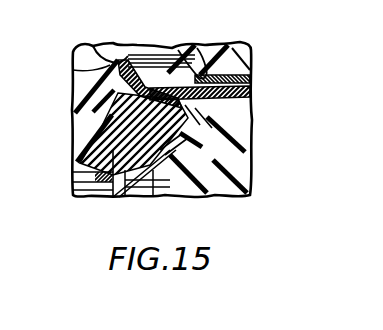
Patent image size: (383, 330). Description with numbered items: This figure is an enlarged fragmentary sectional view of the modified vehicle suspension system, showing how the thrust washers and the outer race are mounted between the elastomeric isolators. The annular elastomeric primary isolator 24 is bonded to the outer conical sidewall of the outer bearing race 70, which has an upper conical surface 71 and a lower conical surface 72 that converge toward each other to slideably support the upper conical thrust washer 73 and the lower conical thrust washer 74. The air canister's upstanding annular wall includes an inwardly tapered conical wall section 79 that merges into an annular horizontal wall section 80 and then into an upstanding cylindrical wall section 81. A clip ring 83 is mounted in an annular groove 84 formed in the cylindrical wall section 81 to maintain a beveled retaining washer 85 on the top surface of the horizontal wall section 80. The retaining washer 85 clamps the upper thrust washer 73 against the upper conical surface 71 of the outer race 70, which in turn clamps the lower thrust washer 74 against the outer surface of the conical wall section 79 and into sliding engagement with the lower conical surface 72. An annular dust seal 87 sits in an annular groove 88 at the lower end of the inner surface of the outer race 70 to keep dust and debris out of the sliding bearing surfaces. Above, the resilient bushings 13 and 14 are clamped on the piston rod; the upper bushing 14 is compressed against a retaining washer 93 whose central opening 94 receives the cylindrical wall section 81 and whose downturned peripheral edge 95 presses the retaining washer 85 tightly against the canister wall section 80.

The lower resilient bushing 13 is at (222, 180).
The upper bushing 14 is at (172, 48).
The primary isolator 24 is at (107, 63).
The outer bearing race 70 is at (90, 128).
The upper conical surface 71 is at (122, 108).
The lower conical surface 72 is at (90, 144).
The upper conical thrust washer 73 is at (112, 90).
The lower conical thrust washer 74 is at (163, 196).
The inwardly tapered conical wall section 79 is at (198, 197).
The annular horizontal wall section 80 is at (203, 163).
The upstanding cylindrical wall section 81 is at (251, 98).
The clip ring 83 is at (251, 132).
The annular groove 84 is at (251, 80).
The beveled retaining washer 85 is at (163, 76).
The annular dust seal 87 is at (75, 180).
The annular groove 88 is at (108, 197).
The retaining washer 93 is at (220, 46).
The central opening 94 is at (250, 47).
The downturned peripheral edge 95 is at (196, 50).